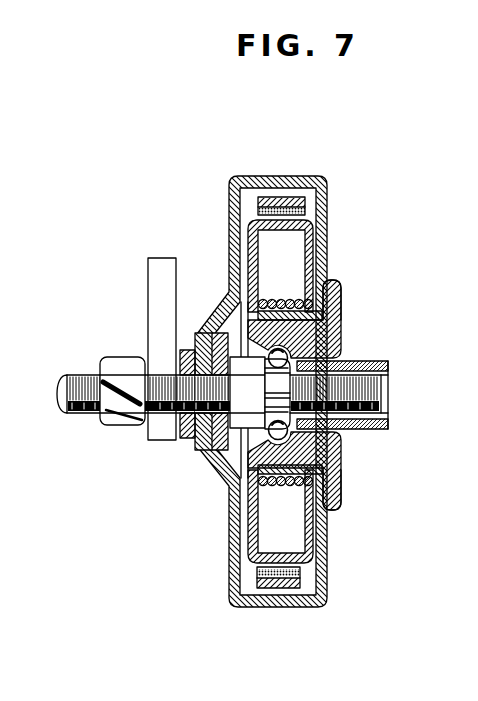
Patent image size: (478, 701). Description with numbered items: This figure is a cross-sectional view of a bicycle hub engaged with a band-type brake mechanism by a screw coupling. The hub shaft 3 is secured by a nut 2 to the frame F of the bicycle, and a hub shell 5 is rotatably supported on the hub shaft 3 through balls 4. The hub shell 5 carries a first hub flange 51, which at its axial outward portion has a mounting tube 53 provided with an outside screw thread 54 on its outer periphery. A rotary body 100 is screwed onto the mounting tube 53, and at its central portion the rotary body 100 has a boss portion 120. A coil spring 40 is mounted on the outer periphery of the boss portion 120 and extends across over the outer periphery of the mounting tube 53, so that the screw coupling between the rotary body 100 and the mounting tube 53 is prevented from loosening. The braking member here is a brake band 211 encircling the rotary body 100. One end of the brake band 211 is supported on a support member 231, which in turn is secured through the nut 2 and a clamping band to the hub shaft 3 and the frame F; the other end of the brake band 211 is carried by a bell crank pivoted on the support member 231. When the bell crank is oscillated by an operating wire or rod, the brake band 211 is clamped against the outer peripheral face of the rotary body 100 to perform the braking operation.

The rotary body 100 is at (322, 206).
The boss portion 120 is at (312, 234).
The coil spring 40 is at (292, 300).
The outside screw thread 54 is at (336, 281).
The first hub flange 51 is at (306, 305).
The mounting tube 53 is at (340, 328).
The balls 4 is at (289, 356).
The hub shell 5 is at (391, 366).
The hub shaft 3 is at (380, 397).
The nut 2 is at (118, 421).
The frame F is at (156, 443).
The support member 231 is at (208, 477).
The brake band 211 is at (291, 200).